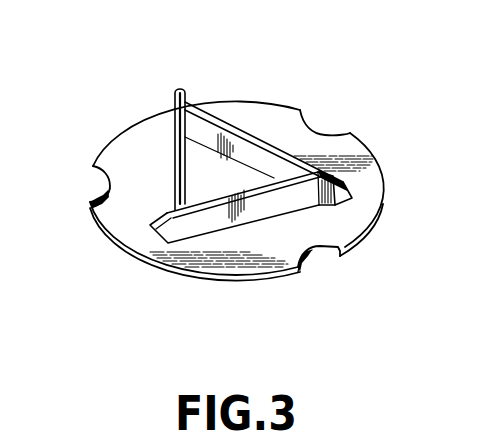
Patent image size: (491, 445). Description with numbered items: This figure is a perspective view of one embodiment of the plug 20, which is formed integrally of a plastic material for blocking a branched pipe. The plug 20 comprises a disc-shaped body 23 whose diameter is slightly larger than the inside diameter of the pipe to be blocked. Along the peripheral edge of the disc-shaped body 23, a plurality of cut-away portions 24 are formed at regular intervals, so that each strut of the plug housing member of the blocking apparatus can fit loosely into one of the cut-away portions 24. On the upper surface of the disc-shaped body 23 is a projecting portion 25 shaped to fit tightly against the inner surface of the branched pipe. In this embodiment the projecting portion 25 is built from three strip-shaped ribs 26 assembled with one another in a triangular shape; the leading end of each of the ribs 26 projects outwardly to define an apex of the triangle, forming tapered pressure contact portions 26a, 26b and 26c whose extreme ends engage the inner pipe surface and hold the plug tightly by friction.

The plug 20 is at (314, 52).
The disc-shaped body 23 is at (347, 222).
The cut-away portions 24 is at (100, 178).
The projecting portion 25 is at (368, 140).
The strip-shaped ribs 26 is at (271, 179).
The tapered pressure contact portion 26a is at (148, 231).
The tapered pressure contact portion 26b is at (352, 198).
The tapered pressure contact portion 26c is at (176, 90).